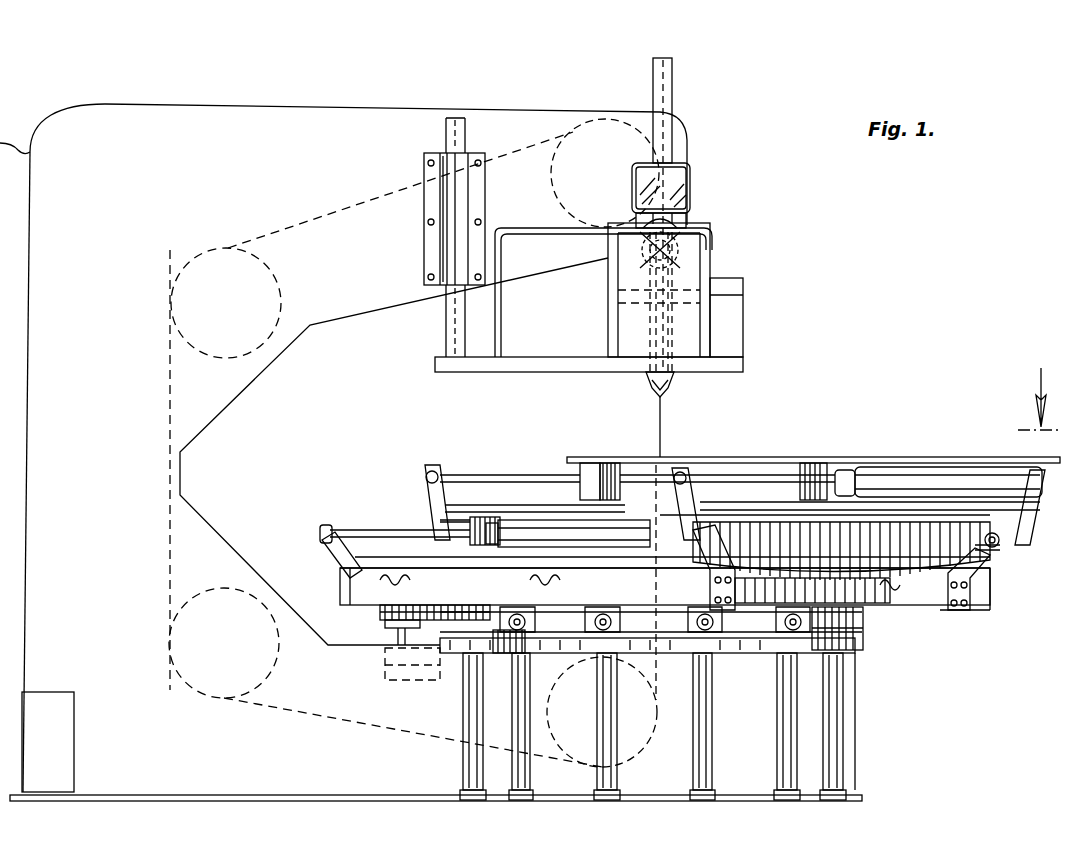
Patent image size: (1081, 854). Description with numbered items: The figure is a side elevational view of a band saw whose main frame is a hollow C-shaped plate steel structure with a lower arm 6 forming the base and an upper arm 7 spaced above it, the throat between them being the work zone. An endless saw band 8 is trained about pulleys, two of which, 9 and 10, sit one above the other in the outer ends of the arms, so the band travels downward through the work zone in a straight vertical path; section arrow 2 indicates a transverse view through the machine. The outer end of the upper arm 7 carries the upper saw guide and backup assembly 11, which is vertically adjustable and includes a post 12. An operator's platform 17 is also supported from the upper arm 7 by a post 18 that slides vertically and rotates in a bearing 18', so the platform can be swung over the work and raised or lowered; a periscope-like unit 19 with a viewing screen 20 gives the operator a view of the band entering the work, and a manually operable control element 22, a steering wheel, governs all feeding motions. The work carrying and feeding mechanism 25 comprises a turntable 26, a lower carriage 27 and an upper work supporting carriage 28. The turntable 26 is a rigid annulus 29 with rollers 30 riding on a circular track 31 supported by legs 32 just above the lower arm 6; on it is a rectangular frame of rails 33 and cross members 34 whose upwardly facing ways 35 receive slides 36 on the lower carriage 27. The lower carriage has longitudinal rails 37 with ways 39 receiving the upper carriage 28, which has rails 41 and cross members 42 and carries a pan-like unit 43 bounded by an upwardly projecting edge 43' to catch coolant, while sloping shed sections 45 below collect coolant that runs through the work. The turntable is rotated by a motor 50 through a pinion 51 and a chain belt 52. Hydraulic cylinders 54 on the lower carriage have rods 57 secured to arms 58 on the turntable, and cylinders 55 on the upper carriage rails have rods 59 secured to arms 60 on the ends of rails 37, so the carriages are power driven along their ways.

The upper arm 7 is at (528, 112).
The pulley 9 is at (600, 135).
The post 12 is at (668, 82).
The viewing screen 20 is at (688, 178).
The periscope-like unit 19 is at (688, 222).
The control element 22 is at (690, 238).
The upper saw guide and backup assembly 11 is at (723, 268).
The bearing 18' is at (476, 219).
The post 18 is at (431, 237).
The operator's platform 17 is at (562, 352).
The saw band 8 is at (662, 404).
The pan-like unit 43 is at (813, 456).
The upwardly projecting edge 43' is at (581, 456).
The rails 41 is at (832, 468).
The rods 59 is at (742, 482).
The cylinders 55 is at (905, 480).
The upper work supporting carriage 28 is at (960, 462).
The section line arrow 2 is at (1040, 412).
The cross members 42 is at (718, 470).
The ways 39 is at (765, 520).
The arms 60 is at (438, 468).
The shed sections 45 is at (500, 500).
The cylinders 54 is at (555, 520).
The slides 36 is at (505, 540).
The rods 57 is at (385, 520).
The longitudinal rails 37 is at (470, 532).
The arms 58 is at (328, 548).
The ways 35 is at (385, 560).
The rails 33 is at (627, 597).
The chain belt 52 is at (378, 610).
The pinion 51 is at (392, 624).
The motor 50 is at (384, 662).
The annulus 29 is at (736, 612).
The rollers 30 is at (690, 635).
The track 31 is at (748, 652).
The cross members 34 is at (878, 600).
The legs 32 is at (462, 756).
The lower arm 6 is at (856, 706).
The pulley 10 is at (648, 752).
The work carrying and feeding mechanism 25 is at (897, 661).
The lower carriage 27 is at (998, 542).
The turntable 26 is at (962, 608).